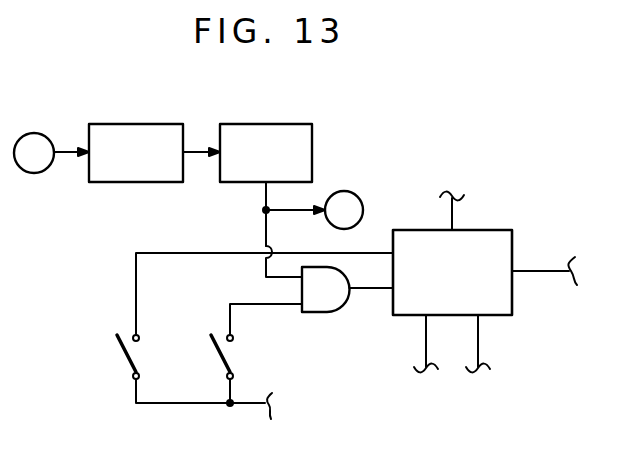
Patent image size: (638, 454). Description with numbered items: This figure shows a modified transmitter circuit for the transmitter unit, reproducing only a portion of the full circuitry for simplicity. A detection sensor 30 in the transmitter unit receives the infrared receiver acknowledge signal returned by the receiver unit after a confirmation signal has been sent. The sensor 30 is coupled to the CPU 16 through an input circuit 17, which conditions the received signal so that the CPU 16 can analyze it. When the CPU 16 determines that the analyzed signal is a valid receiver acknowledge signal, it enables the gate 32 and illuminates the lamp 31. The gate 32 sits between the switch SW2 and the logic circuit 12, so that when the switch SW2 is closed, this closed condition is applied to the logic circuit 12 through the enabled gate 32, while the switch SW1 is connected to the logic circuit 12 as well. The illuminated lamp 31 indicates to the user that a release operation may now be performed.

The detection sensor 30 is at (34, 143).
The input circuit 17 is at (151, 135).
The CPU 16 is at (294, 133).
The lamp 31 is at (345, 203).
The logic circuit 12 is at (463, 283).
The gate 32 is at (327, 305).
The switch SW1 is at (120, 352).
The switch SW2 is at (213, 352).